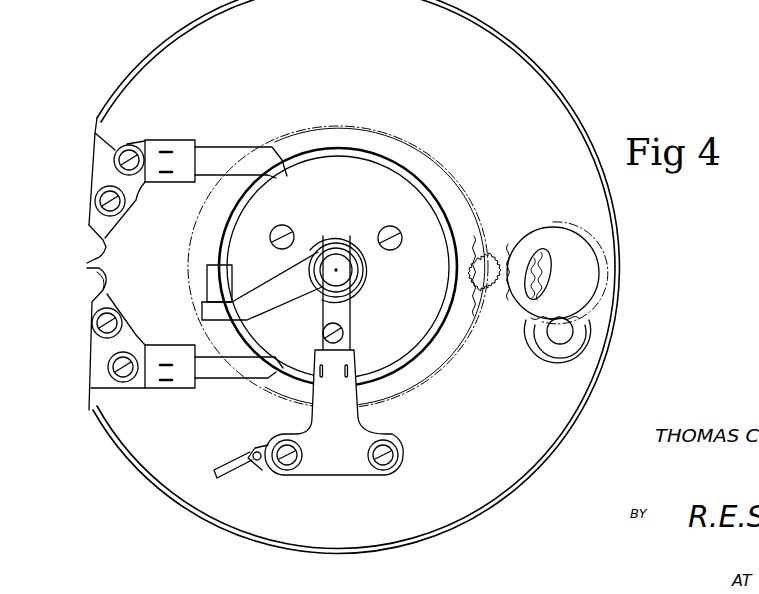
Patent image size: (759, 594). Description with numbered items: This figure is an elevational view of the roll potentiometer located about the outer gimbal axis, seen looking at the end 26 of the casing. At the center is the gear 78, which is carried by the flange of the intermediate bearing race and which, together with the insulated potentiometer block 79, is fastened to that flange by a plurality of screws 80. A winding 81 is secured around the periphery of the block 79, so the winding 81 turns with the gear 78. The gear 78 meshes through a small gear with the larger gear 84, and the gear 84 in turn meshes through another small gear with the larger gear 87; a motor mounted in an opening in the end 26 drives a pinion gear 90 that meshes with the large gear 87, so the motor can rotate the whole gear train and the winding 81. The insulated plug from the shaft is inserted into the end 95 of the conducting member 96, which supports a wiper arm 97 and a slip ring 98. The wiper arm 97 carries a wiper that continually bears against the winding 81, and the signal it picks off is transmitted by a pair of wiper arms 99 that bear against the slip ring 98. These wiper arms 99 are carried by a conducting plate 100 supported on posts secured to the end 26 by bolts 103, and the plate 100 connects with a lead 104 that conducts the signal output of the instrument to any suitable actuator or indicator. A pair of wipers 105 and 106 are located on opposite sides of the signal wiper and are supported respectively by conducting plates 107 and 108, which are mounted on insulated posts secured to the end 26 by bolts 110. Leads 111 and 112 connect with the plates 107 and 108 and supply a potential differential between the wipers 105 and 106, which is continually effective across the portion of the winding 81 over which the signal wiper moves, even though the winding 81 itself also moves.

The end of the casing 26 is at (356, 276).
The gear 78 is at (434, 182).
The insulated potentiometer block 79 is at (417, 287).
The screws 80 is at (388, 228).
The winding 81 is at (412, 366).
The larger gear 84 is at (506, 232).
The larger gear 87 is at (575, 243).
The pinion gear 90 is at (556, 338).
The end of the conducting member 95 is at (356, 323).
The conducting member 96 is at (350, 279).
The wiper arm 97 is at (288, 308).
The slip ring 98 is at (236, 286).
The wiper arms 99 is at (318, 322).
The conducting plate 100 is at (344, 468).
The bolts 103 is at (396, 448).
The lead 104 is at (226, 470).
The wiper 105 is at (258, 148).
The wiper 106 is at (224, 390).
The conducting plate 107 is at (178, 136).
The conducting plate 108 is at (178, 390).
The bolts 110 is at (129, 150).
The lead 111 is at (110, 252).
The lead 112 is at (108, 282).